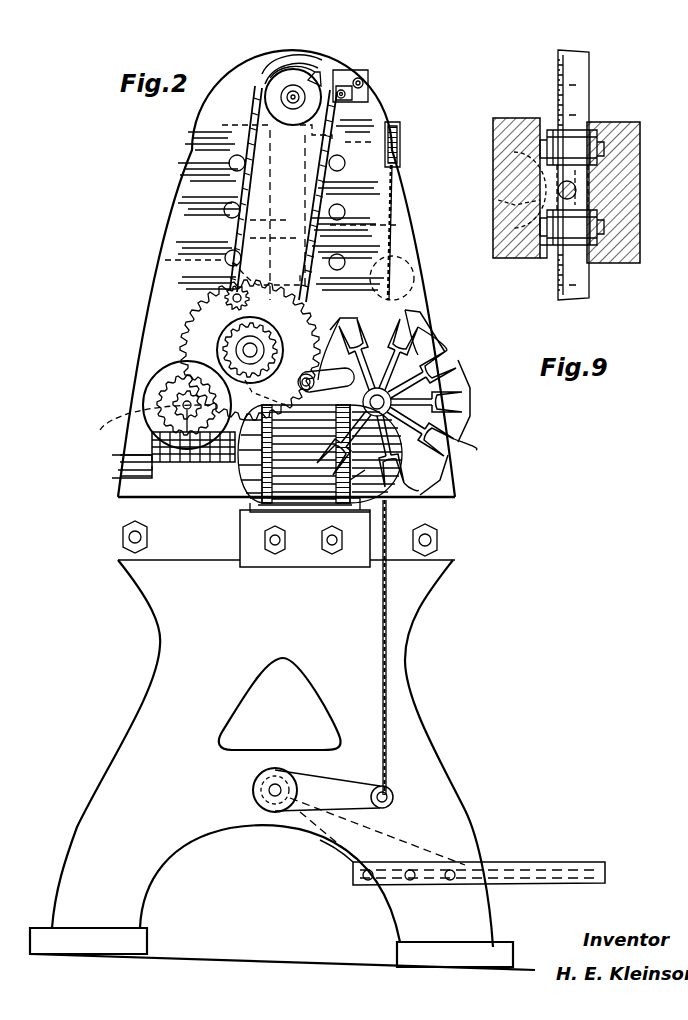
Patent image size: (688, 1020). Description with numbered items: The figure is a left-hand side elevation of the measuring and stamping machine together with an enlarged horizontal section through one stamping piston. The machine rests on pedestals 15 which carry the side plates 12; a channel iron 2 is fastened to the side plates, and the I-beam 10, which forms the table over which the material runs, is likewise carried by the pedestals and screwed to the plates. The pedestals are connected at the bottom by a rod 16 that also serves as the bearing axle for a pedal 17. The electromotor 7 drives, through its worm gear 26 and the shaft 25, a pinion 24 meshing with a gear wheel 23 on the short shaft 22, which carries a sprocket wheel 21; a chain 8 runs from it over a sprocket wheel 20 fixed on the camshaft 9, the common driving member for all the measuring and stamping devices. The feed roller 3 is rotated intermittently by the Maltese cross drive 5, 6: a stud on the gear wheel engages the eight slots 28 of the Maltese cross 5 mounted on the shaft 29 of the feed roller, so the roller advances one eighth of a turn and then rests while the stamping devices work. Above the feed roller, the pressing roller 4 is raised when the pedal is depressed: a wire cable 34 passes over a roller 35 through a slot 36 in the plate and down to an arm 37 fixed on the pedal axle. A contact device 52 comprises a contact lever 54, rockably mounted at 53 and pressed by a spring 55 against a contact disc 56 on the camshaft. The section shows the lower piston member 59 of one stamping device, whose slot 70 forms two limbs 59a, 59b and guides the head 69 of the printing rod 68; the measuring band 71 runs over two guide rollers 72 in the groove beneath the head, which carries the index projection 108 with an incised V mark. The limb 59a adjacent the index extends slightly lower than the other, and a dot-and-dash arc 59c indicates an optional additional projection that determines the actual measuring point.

In FIG. 2, the channel iron 2 is at (345, 140).
In FIG. 2, the feed roller 3 is at (410, 322).
In FIG. 2, the pressing roller 4 is at (412, 270).
In FIG. 2, the Maltese cross 5 is at (460, 368).
In FIG. 2, the Maltese cross drive 6 is at (252, 375).
In FIG. 2, the electromotor 7 is at (245, 500).
In FIG. 2, the chain 8 is at (228, 276).
In FIG. 2, the camshaft 9 is at (268, 95).
In FIG. 2, the I-beam 10 is at (228, 270).
In FIG. 2, the side plate 12 is at (170, 232).
In FIG. 2, the pedestal 15 is at (282, 765).
In FIG. 2, the rod 16 is at (272, 798).
In FIG. 2, the pedal 17 is at (516, 878).
In FIG. 2, the sprocket wheel 20 is at (282, 72).
In FIG. 2, the sprocket wheel 21 is at (234, 366).
In FIG. 2, the short shaft 22 is at (235, 332).
In FIG. 2, the gear wheel 23 is at (178, 362).
In FIG. 2, the pinion 24 is at (130, 430).
In FIG. 2, the shaft 25 is at (193, 448).
In FIG. 2, the worm gear 26 is at (118, 470).
In FIG. 2, the slot 28 is at (468, 441).
In FIG. 2, the shaft 29 is at (326, 387).
In FIG. 2, the wire cable 34 is at (394, 195).
In FIG. 2, the roller 35 is at (399, 132).
In FIG. 2, the slot 36 is at (398, 122).
In FIG. 2, the arm 37 is at (338, 780).
In FIG. 2, the contact device 52 is at (358, 78).
In FIG. 2, the pivot 53 is at (365, 83).
In FIG. 2, the contact lever 54 is at (322, 68).
In FIG. 2, the spring 55 is at (350, 70).
In FIG. 2, the contact disc 56 is at (262, 70).
In FIG. 9, the piston member 59 is at (608, 265).
In FIG. 9, the limb 59a is at (500, 126).
In FIG. 9, the limb 59b is at (612, 122).
In FIG. 9, the additional projecting part 59c is at (512, 175).
In FIG. 9, the printing rod 68 is at (580, 186).
In FIG. 9, the head 69 is at (578, 202).
In FIG. 9, the groove 70 is at (540, 258).
In FIG. 9, the measuring band 71 is at (586, 70).
In FIG. 9, the guide roller 72 is at (552, 130).
In FIG. 9, the index projection 108 is at (540, 205).